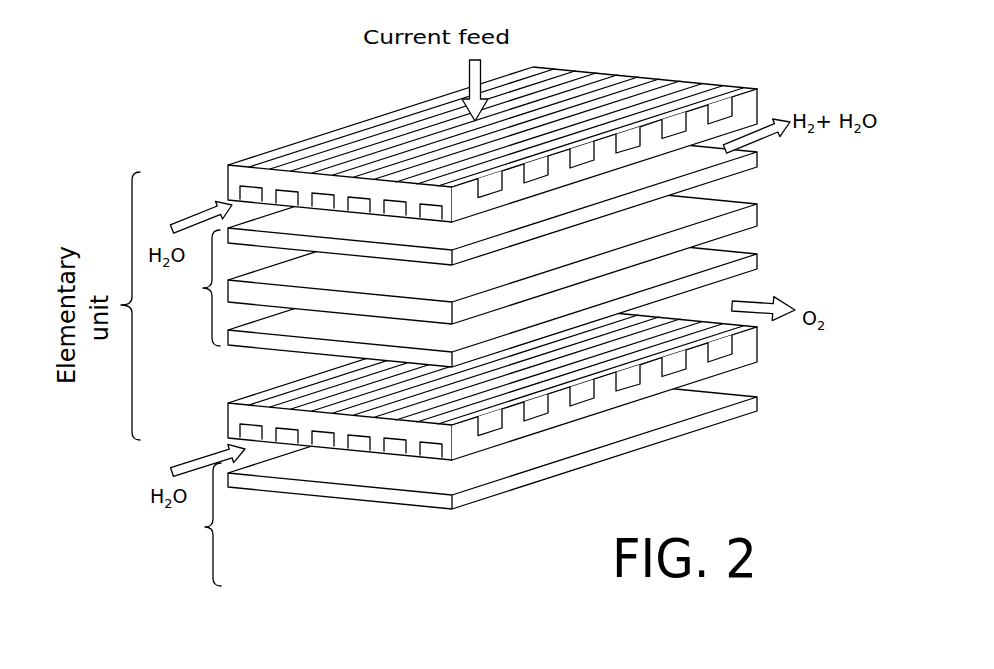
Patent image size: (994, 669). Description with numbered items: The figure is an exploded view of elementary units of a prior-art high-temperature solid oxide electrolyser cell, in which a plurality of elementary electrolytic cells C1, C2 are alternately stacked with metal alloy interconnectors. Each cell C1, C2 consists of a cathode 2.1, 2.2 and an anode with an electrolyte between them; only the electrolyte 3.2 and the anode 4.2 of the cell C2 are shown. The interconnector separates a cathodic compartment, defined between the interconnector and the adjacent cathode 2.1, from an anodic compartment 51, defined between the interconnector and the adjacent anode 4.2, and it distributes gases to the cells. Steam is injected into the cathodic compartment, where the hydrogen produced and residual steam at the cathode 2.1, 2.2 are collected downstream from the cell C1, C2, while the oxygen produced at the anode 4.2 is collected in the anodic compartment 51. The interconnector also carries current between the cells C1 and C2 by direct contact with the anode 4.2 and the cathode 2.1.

The cathode 2.1 is at (755, 400).
The cathode 2.2 is at (757, 157).
The electrolyte 3.2 is at (757, 216).
The anode 4.2 is at (757, 262).
The anodic compartment 51 is at (283, 370).
The elementary electrolytic cell C1 is at (197, 524).
The elementary electrolytic cell C2 is at (193, 288).